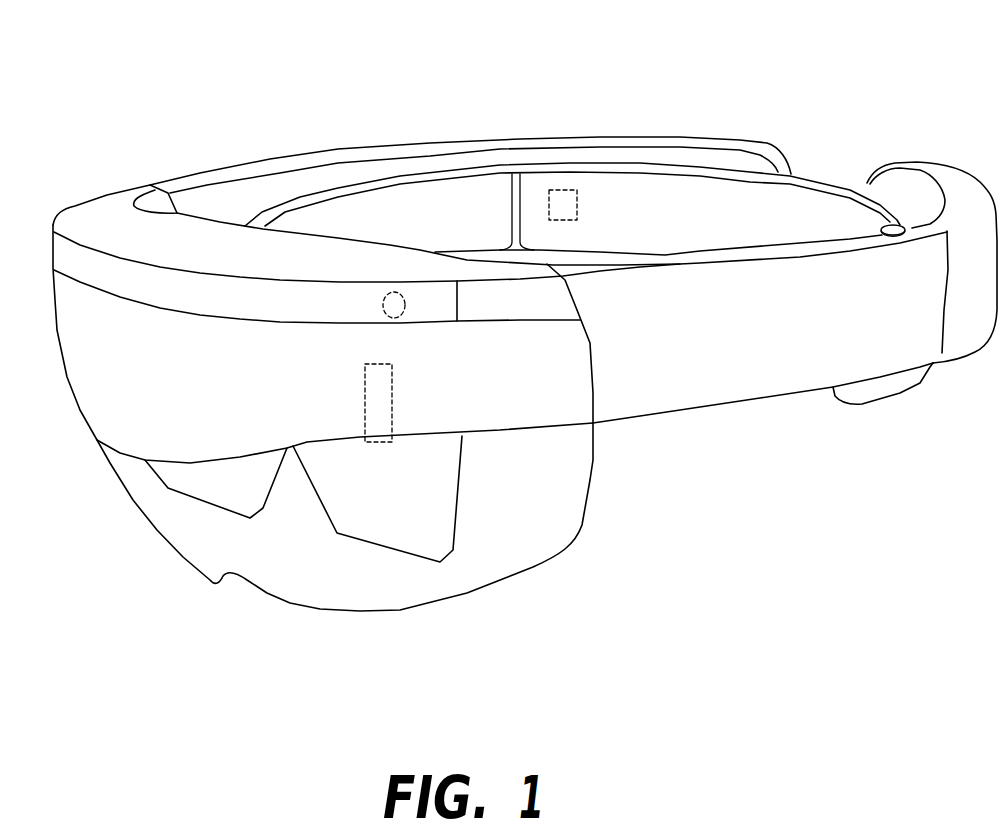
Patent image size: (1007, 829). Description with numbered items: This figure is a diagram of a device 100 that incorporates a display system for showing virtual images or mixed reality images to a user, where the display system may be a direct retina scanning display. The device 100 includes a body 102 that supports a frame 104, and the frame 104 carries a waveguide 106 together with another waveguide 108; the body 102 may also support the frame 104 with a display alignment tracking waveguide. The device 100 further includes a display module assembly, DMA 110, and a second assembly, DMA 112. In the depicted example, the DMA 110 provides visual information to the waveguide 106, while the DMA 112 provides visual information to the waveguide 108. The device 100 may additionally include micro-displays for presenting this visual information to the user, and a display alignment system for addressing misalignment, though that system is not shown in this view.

The device 100 is at (76, 118).
The body 102 is at (253, 612).
The frame 104 is at (720, 358).
The waveguide 106 is at (397, 318).
The another waveguide 108 is at (228, 262).
The display module assembly (DMA) 110 is at (563, 190).
The DMA 112 is at (392, 408).